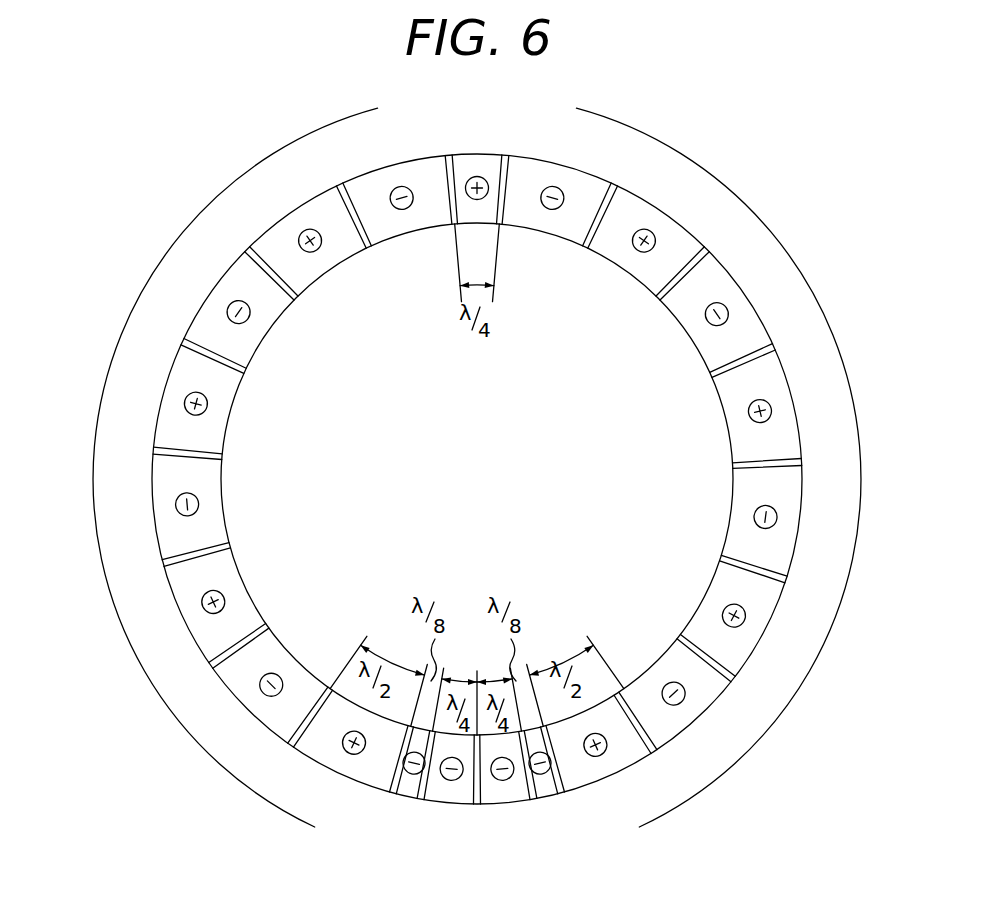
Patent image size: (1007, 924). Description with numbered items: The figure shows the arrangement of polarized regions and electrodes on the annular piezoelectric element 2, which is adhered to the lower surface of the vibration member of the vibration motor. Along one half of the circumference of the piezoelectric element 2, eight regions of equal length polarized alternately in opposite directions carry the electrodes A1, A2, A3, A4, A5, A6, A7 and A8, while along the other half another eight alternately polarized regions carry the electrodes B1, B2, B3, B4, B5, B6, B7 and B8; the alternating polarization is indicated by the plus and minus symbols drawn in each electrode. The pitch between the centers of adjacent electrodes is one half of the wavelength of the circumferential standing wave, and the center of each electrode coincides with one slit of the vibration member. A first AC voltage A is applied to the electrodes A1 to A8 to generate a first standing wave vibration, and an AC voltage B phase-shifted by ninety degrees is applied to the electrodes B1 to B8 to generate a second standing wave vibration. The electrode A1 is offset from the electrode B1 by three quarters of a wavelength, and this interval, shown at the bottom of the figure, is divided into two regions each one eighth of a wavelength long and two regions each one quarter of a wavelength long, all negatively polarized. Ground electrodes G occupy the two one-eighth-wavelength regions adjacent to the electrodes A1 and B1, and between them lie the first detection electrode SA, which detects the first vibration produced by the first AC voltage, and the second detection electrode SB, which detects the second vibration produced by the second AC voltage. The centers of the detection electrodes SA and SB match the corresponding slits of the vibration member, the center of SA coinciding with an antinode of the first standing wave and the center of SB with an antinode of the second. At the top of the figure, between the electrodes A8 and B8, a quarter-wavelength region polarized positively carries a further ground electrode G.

The annular piezoelectric element 2 is at (770, 432).
The first AC voltage A is at (861, 487).
The AC voltage phase-shifted by 90° B is at (94, 480).
The electrode A1 is at (622, 779).
The electrode A2 is at (705, 718).
The electrode A3 is at (767, 628).
The electrode A4 is at (782, 517).
The electrode A5 is at (795, 392).
The electrode A6 is at (747, 287).
The electrode A7 is at (662, 210).
The electrode A8 is at (547, 160).
The electrode B1 is at (325, 777).
The electrode B2 is at (236, 710).
The electrode B3 is at (179, 614).
The electrode B4 is at (165, 504).
The electrode B5 is at (160, 378).
The electrode B6 is at (211, 282).
The electrode B7 is at (291, 207).
The electrode B8 is at (406, 160).
The ground electrode G is at (477, 164).
The first detection electrode SA is at (505, 823).
The second detection electrode SB is at (448, 823).